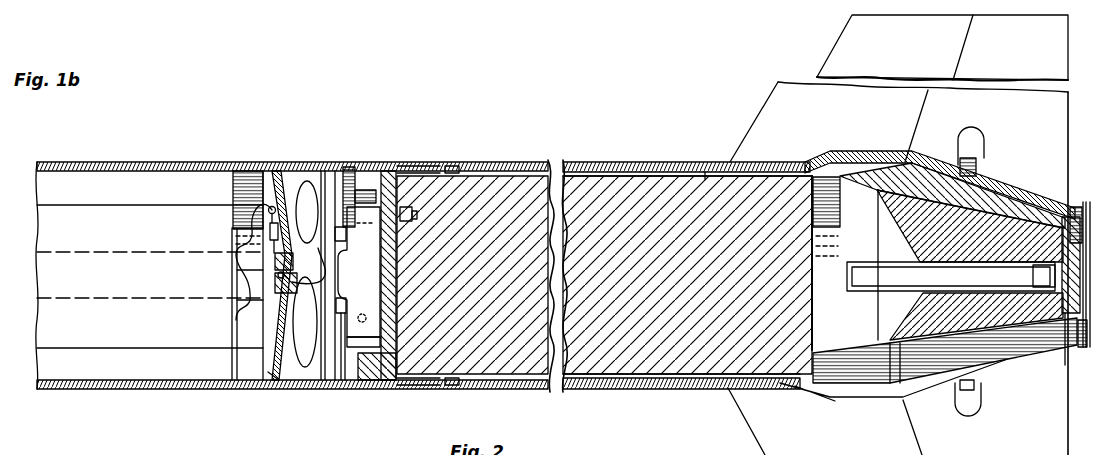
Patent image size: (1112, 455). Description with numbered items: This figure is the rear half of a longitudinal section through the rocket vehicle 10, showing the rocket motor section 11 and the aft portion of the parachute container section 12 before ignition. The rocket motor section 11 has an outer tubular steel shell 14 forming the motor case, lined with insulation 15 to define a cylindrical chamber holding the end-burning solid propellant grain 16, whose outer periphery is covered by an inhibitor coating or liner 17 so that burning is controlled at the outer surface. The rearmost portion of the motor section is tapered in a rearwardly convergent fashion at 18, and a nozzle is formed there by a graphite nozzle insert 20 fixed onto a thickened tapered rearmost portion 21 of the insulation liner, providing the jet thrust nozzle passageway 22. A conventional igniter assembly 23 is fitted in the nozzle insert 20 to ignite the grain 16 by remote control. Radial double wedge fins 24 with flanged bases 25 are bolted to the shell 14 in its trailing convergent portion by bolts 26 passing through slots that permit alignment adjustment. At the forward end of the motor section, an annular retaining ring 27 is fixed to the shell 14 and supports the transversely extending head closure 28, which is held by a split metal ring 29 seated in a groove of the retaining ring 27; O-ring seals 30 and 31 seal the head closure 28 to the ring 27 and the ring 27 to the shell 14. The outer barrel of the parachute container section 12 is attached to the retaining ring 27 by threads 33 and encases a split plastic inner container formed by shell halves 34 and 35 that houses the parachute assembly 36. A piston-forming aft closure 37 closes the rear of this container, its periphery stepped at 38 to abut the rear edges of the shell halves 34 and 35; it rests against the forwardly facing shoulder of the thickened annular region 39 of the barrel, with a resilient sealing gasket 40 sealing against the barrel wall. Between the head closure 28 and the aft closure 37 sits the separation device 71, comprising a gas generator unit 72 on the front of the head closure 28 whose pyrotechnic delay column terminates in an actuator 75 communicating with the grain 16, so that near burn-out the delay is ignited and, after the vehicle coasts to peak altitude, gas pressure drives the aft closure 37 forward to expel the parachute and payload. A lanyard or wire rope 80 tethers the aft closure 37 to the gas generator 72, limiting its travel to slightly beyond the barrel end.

The rocket vehicle 10 is at (513, 135).
The rocket motor section 11 is at (597, 162).
The parachute container section 12 is at (162, 162).
The outer tubular steel shell 14 is at (522, 162).
The insulation 15 is at (518, 389).
The end-burning solid propellant grain 16 is at (663, 239).
The inhibitor coating or liner 17 is at (711, 175).
The tapered rearmost portion 18 is at (1034, 200).
The graphite nozzle insert 20 is at (908, 238).
The thickened tapered rearmost portion of the insulation liner 21 is at (893, 172).
The jet thrust nozzle passageway 22 is at (1084, 203).
The igniter assembly 23 is at (866, 280).
The radial double wedge fins 24 is at (842, 46).
The flanged bases 25 is at (850, 160).
The bolts 26 is at (985, 150).
The annular retaining ring 27 is at (372, 170).
The head closure 28 is at (380, 292).
The split metal ring 29 is at (345, 380).
The O-ring seal 30 is at (380, 380).
The O-ring seal 31 is at (400, 166).
The threads 33 is at (337, 167).
The shell half 34 is at (246, 170).
The shell half 35 is at (250, 355).
The parachute assembly 36 is at (114, 190).
The piston-forming aft closure 37 is at (295, 175).
The step 38 is at (279, 380).
The thickened annular region 39 is at (296, 384).
The resilient sealing gasket 40 is at (283, 171).
The separation device 71 is at (330, 250).
The gas generator unit 72 is at (362, 273).
The actuator 75 is at (418, 214).
The lanyard or wire rope 80 is at (305, 274).